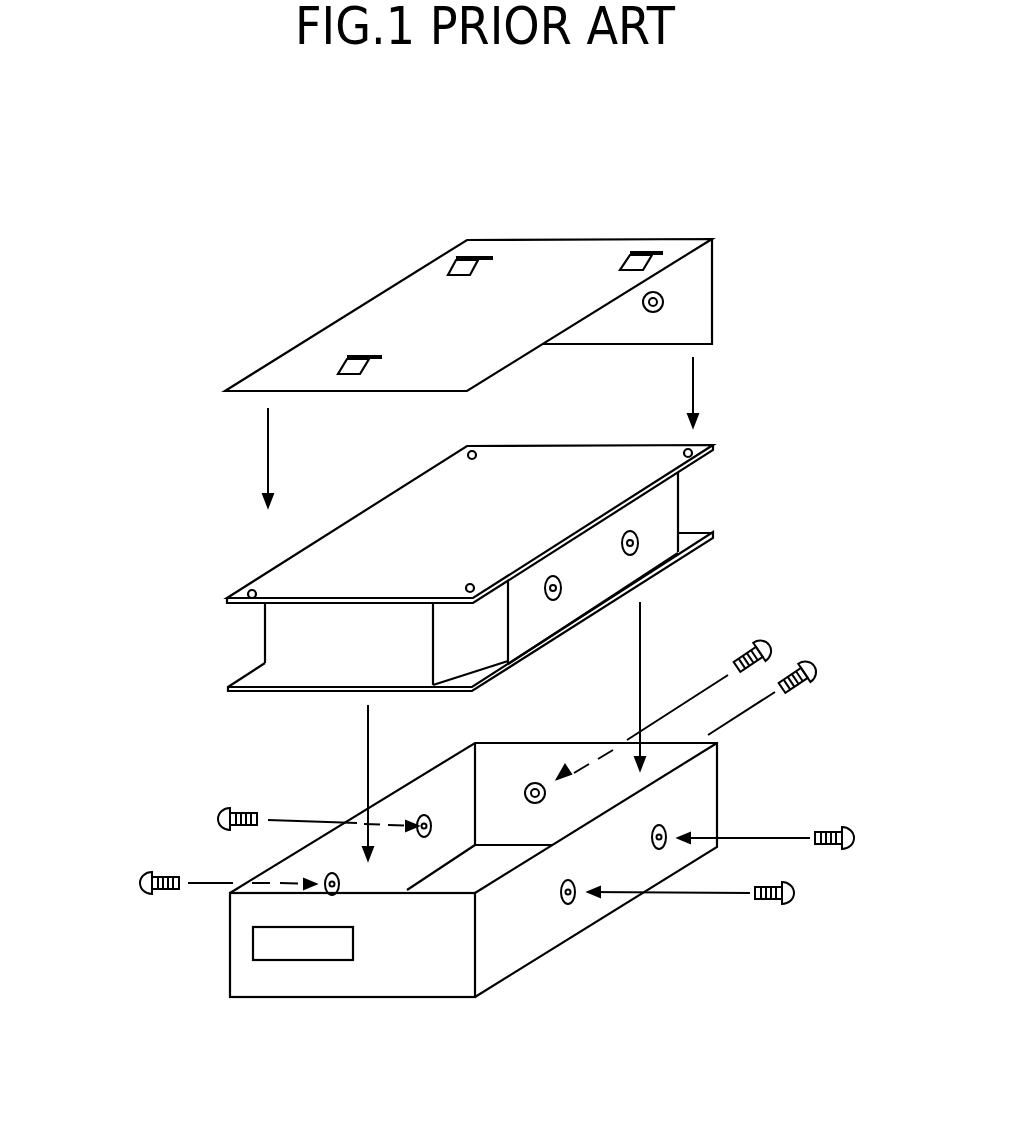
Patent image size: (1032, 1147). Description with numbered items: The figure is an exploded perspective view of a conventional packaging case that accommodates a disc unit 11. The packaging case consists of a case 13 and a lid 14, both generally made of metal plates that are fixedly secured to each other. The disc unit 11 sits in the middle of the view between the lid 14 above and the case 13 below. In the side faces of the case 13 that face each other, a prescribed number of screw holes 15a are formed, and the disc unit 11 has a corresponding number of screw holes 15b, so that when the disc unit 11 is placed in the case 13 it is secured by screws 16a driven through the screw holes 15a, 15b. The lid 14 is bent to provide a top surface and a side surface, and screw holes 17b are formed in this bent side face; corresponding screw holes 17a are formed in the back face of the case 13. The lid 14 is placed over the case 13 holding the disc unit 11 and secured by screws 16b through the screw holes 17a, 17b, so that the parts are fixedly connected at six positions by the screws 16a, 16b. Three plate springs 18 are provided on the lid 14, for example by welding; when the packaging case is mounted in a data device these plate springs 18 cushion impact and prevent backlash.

The disc unit 11 is at (718, 447).
The case 13 is at (720, 778).
The lid 14 is at (716, 262).
The screw holes 15a is at (425, 814).
The screw holes 15b is at (557, 599).
The screws 16a is at (245, 808).
The screws 16b is at (777, 637).
The screw holes 17a is at (536, 782).
The screw holes 17b is at (664, 302).
The plate springs 18 is at (453, 260).